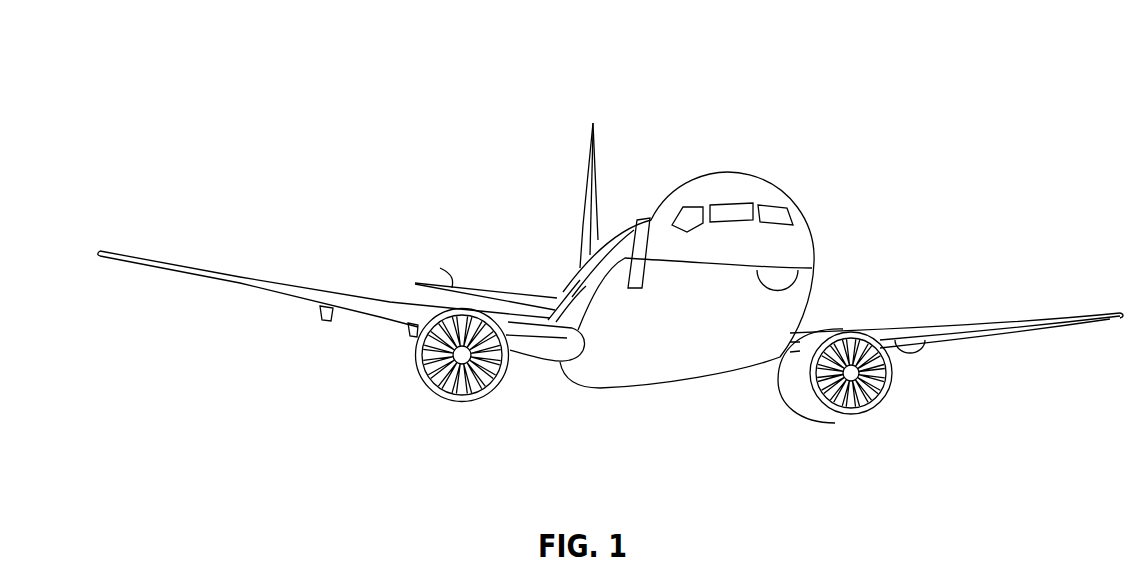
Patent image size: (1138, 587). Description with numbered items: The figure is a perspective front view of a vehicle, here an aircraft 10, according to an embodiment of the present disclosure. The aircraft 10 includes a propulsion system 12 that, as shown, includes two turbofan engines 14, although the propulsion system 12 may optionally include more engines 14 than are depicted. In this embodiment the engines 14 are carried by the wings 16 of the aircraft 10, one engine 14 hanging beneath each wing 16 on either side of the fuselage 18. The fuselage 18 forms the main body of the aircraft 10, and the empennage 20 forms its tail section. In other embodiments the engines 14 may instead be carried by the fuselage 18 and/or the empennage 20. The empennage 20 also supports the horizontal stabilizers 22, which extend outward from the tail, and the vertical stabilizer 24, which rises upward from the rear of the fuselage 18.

The aircraft 10 is at (354, 67).
The propulsion system 12 is at (932, 413).
The turbofan engines 14 is at (455, 402).
The wings 16 is at (238, 278).
The fuselage 18 is at (808, 238).
The empennage 20 is at (582, 268).
The horizontal stabilizers 22 is at (452, 288).
The vertical stabilizer 24 is at (589, 163).